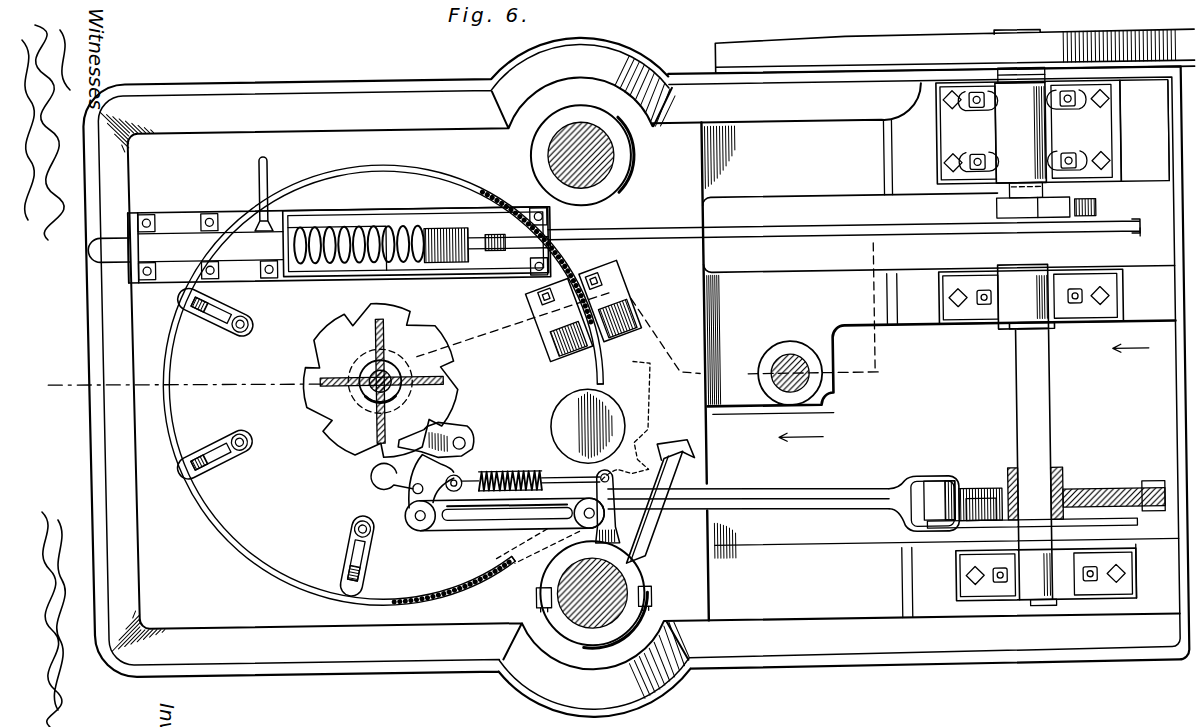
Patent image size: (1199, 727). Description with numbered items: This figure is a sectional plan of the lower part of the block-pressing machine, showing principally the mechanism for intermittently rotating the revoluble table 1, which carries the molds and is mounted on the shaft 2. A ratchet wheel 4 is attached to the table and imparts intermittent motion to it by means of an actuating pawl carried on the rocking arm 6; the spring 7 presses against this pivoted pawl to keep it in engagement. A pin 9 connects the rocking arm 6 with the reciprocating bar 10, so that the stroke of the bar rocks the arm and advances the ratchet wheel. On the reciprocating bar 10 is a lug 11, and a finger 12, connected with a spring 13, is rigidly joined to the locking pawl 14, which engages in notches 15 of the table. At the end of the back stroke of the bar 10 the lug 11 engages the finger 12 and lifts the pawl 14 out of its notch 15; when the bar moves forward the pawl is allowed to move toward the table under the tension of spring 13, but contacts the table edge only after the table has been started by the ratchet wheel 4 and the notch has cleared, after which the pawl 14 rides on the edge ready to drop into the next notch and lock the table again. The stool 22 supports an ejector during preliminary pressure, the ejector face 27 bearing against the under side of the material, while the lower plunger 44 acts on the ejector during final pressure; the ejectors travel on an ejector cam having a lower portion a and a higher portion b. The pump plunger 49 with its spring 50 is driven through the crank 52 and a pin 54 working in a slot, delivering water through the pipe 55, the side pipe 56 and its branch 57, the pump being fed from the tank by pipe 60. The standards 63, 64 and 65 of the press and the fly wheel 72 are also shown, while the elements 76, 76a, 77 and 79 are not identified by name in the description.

The revoluble table 1 is at (362, 386).
The shaft 2 is at (431, 351).
The ratchet wheel 4 is at (352, 401).
The rocking arm 6 is at (410, 488).
The spring 7 is at (376, 479).
The pin 9 is at (417, 528).
The reciprocating bar 10 is at (50, 378).
The lug 11 is at (568, 534).
The finger 12 is at (548, 559).
The spring 13 is at (497, 470).
The locking pawl 14 is at (639, 548).
The notches 15 is at (648, 442).
The stool 22 is at (562, 306).
The face of the ejector 27 is at (206, 507).
The plunger 44 is at (556, 411).
The pump plunger 49 is at (320, 229).
The spring 50 is at (382, 230).
The crank 52 is at (999, 215).
The pin 54 is at (1094, 222).
The pipe 55 is at (90, 250).
The side pipe 56 is at (447, 431).
The branch 57 is at (750, 232).
The pipe 60 is at (261, 172).
The standard 63 is at (653, 593).
The standard 64 is at (618, 159).
The standard 65 is at (797, 355).
The fly wheel 72 is at (866, 44).
The fork block 76 is at (935, 481).
The collar 76a is at (988, 478).
The disk 77 is at (1085, 497).
The vertical shaft 79 is at (1043, 423).
The lower portion of the ejector cam a is at (556, 478).
The higher portion of the ejector cam b is at (214, 450).